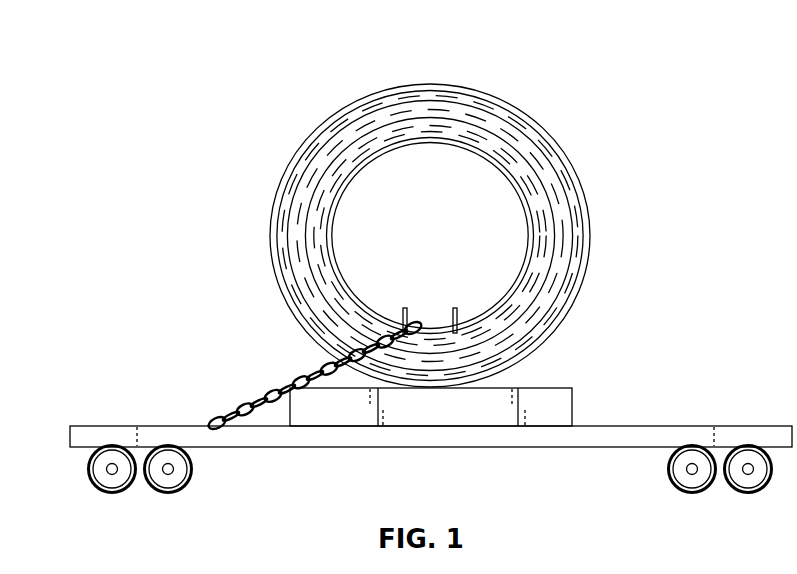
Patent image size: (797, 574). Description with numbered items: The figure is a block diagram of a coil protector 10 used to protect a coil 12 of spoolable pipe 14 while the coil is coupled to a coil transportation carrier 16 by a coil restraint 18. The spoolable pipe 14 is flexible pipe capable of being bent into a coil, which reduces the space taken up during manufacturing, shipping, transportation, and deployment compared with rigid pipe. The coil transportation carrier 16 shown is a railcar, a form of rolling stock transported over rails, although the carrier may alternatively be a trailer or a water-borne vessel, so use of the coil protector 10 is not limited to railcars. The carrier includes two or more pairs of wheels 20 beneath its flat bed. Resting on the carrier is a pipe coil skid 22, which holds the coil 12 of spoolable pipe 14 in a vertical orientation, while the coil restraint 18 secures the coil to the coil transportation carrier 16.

The coil protector 10 is at (443, 285).
The coil 12 is at (408, 264).
The spoolable pipe 14 is at (348, 110).
The coil transportation carrier 16 is at (670, 426).
The coil restraint 18 is at (265, 396).
The wheels 20 is at (88, 471).
The pipe coil skid 22 is at (573, 405).